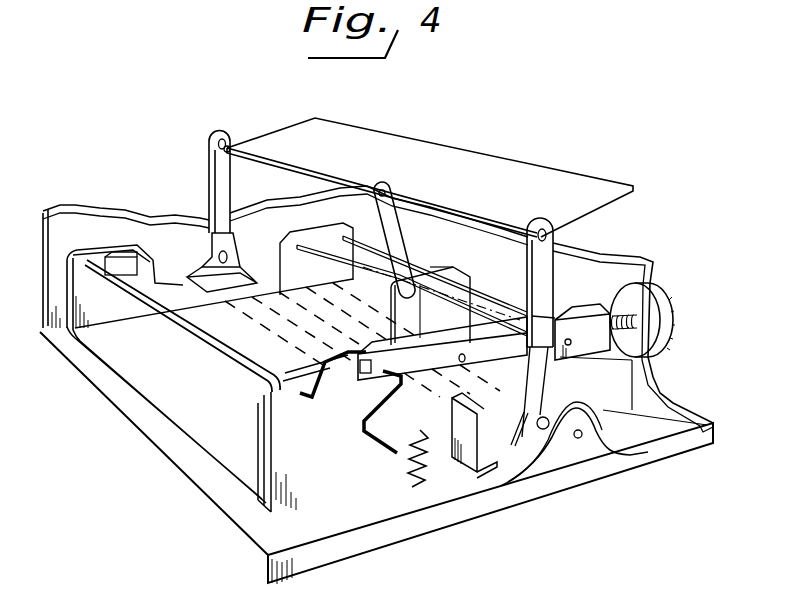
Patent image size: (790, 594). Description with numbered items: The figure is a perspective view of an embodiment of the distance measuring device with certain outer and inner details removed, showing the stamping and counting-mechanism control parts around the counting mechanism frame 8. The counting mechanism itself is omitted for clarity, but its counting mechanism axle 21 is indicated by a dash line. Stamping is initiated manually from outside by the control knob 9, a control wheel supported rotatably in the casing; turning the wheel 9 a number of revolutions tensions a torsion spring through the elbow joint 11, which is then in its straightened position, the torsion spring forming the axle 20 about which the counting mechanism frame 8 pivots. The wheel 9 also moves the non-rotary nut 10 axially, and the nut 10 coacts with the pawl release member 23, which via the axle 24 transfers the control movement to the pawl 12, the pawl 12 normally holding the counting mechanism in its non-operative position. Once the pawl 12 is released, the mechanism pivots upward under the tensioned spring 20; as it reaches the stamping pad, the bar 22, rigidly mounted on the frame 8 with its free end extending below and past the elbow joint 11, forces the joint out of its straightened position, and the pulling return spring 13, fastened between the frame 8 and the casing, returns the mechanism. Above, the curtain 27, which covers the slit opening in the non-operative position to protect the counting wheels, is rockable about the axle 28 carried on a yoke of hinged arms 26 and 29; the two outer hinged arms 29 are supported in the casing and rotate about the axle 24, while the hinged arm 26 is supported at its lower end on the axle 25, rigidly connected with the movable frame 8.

The counting mechanism frame 8 is at (203, 410).
The control knob 9 is at (667, 300).
The non-rotary nut 10 is at (590, 350).
The elbow joint 11 is at (422, 347).
The pawl 12 is at (233, 238).
The pulling return spring 13 is at (427, 490).
The torsion spring axle 20 is at (217, 345).
The counting mechanism axle 21 is at (367, 265).
The bar 22 is at (465, 477).
The pawl release member 23 is at (528, 444).
The axle 24 is at (582, 437).
The axle 25 is at (471, 300).
The hinged arm 26 is at (412, 250).
The curtain 27 is at (347, 133).
The axle 28 is at (232, 147).
The hinged arms 29 is at (218, 200).